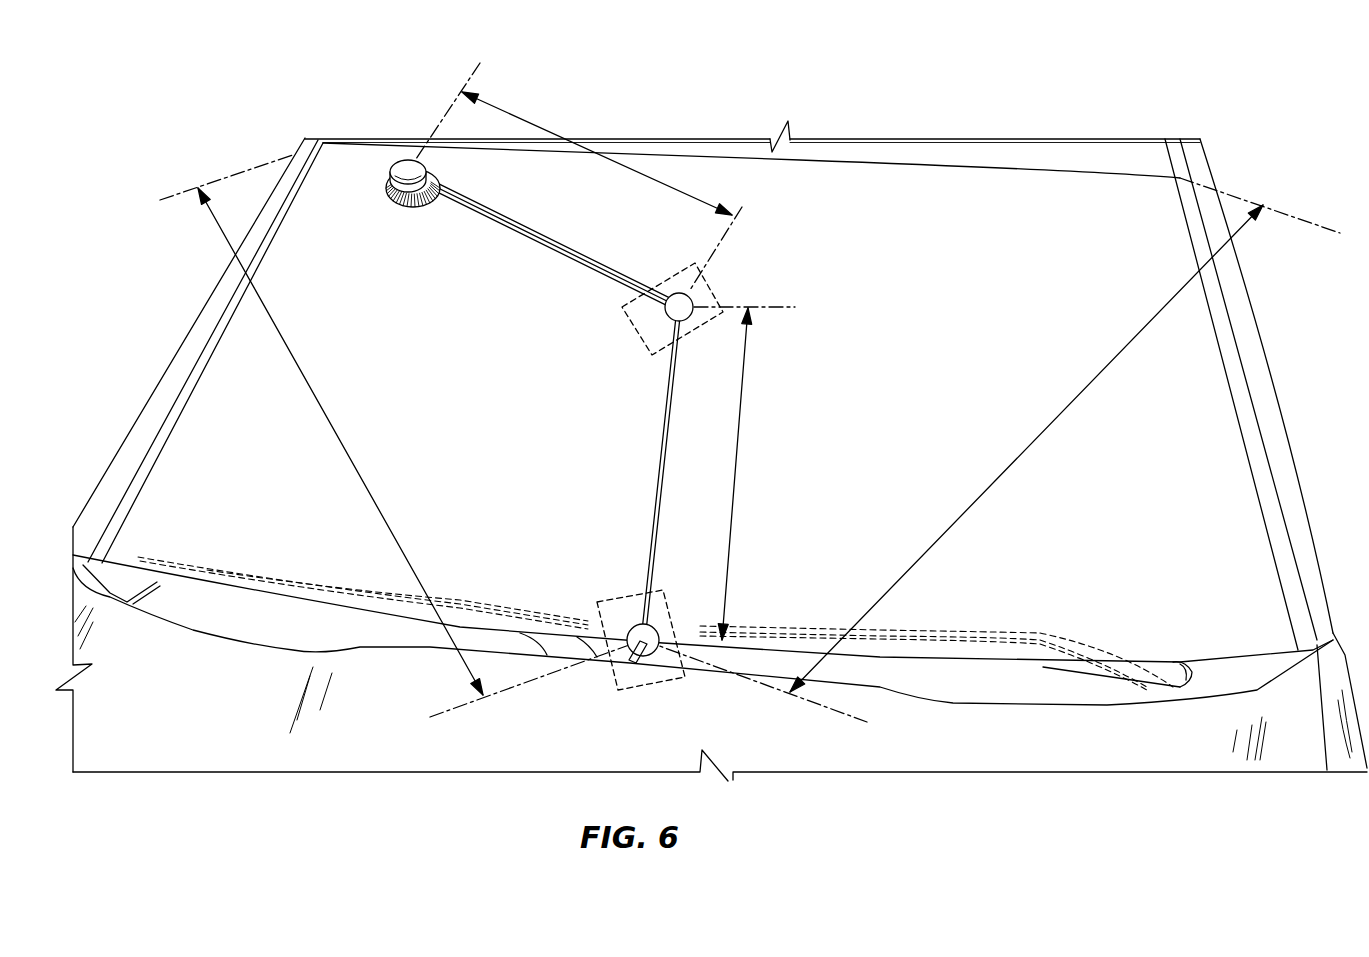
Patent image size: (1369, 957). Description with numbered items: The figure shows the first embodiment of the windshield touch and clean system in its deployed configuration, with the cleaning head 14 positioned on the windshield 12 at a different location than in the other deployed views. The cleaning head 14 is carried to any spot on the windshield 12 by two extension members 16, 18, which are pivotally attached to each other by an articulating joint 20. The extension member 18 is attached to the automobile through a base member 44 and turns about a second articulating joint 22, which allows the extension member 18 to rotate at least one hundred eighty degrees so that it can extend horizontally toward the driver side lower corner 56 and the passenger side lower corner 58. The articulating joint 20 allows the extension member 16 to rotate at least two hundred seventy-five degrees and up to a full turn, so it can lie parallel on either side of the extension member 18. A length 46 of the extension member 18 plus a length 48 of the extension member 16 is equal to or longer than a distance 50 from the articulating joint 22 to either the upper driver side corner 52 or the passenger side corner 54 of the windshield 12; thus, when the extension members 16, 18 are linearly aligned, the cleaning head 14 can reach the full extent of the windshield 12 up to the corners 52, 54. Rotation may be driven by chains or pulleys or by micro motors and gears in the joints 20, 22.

The windshield 12 is at (957, 342).
The cleaning head 14 is at (407, 170).
The extension member 16 is at (517, 232).
The extension member 18 is at (659, 488).
The articulating joint 20 is at (628, 325).
The articulating joint 22 is at (617, 672).
The base member 44 is at (645, 657).
The length 46 is at (737, 453).
The length 48 is at (643, 175).
The distance 50 is at (372, 495).
The upper driver side corner 52 is at (1177, 177).
The passenger side corner 54 is at (318, 139).
The driver side lower corner 56 is at (1303, 650).
The passenger side lower corner 58 is at (100, 563).